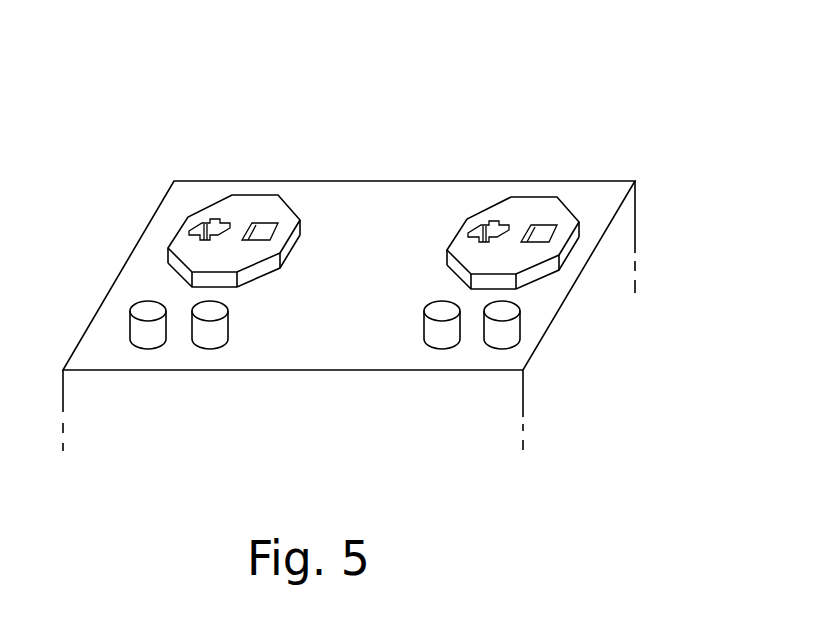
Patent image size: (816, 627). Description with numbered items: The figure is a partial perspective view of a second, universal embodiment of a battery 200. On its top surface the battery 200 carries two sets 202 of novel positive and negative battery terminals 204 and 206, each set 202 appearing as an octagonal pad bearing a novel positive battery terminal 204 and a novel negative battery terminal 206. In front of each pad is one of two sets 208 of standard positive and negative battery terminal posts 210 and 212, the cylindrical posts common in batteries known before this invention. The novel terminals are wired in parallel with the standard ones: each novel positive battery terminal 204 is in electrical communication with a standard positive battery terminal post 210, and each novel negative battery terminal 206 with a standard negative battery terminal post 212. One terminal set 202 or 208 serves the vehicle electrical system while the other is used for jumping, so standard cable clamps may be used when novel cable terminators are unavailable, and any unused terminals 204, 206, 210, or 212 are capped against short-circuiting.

The battery 200 is at (543, 72).
The set of novel positive and negative battery terminals 202 is at (177, 232).
The novel positive battery terminal 204 is at (215, 220).
The novel negative battery terminal 206 is at (262, 226).
The set of standard positive and negative battery terminal posts 208 is at (178, 353).
The standard positive battery terminal post 210 is at (140, 333).
The standard negative battery terminal post 212 is at (218, 335).